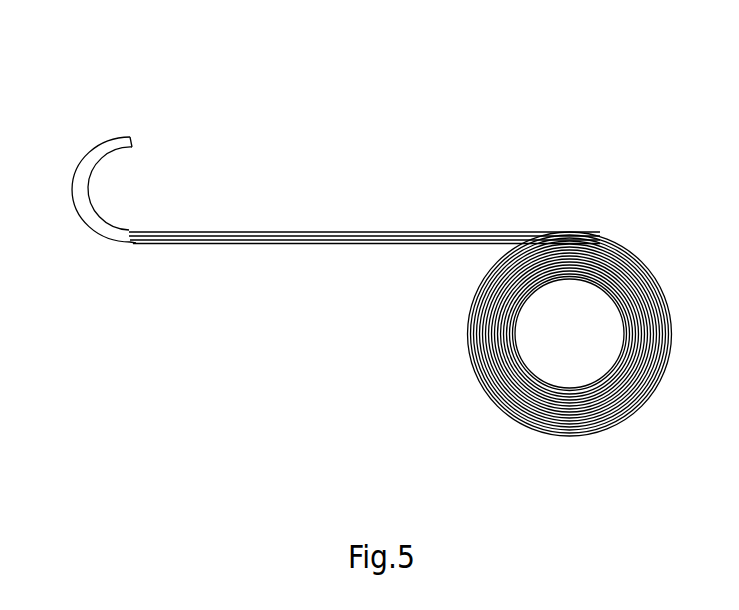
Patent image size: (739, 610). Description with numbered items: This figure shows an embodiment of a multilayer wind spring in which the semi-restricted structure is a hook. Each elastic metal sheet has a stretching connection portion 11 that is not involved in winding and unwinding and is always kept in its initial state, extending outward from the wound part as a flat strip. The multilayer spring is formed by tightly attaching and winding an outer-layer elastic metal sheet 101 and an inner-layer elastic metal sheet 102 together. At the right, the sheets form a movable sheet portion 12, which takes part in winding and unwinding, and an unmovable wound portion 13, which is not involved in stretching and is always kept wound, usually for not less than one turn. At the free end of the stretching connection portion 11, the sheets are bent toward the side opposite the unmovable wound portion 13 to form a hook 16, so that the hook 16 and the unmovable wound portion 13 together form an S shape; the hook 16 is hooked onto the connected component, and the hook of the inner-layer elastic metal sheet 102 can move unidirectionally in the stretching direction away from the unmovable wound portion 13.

The hook 16 is at (95, 133).
The stretching connection portion 11 is at (225, 231).
The outer-layer elastic metal sheet 101 is at (343, 231).
The inner-layer elastic metal sheet 102 is at (307, 240).
The movable sheet portion 12 is at (490, 235).
The unmovable wound portion 13 is at (490, 390).